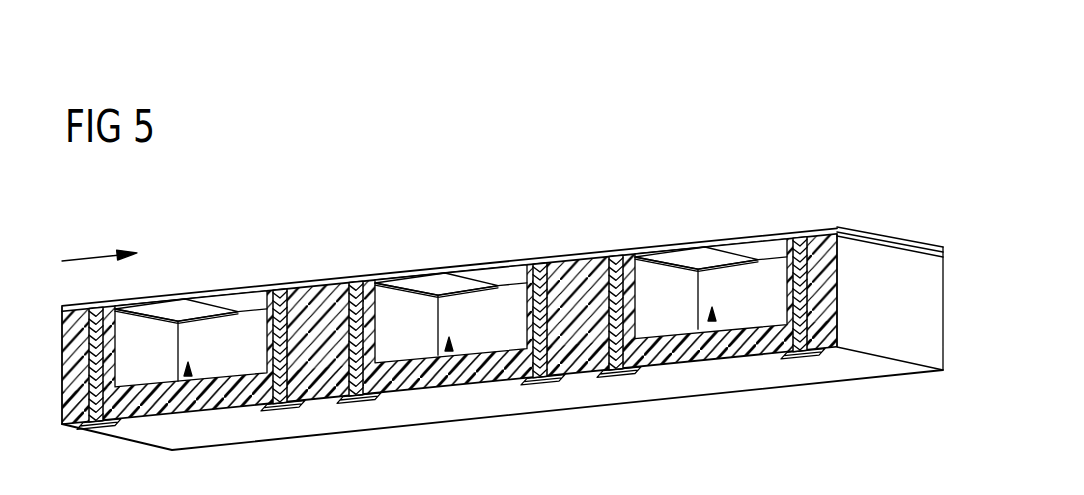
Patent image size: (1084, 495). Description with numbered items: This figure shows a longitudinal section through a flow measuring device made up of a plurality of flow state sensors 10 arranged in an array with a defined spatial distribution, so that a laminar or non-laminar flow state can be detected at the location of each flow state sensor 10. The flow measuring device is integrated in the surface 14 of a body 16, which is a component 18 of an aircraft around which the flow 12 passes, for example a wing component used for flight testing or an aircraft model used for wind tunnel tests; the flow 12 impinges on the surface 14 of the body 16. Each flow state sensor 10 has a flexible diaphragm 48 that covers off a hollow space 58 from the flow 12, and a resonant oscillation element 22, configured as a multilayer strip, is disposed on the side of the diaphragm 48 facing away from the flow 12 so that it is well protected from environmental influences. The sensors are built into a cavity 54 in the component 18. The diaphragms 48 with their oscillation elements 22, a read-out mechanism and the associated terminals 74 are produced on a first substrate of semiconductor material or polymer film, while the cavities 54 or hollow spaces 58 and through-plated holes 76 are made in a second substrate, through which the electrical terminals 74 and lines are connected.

The flow state sensor 10 is at (212, 277).
The flow 12 is at (100, 252).
The surface 14 is at (872, 232).
The body 16 is at (908, 350).
The component 18 is at (875, 387).
The oscillation element 22 is at (453, 278).
The diaphragm 48 is at (200, 296).
The cavity 54 is at (188, 375).
The hollow space 58 is at (235, 368).
The terminal 74 is at (357, 283).
The through-plated hole 76 is at (278, 333).